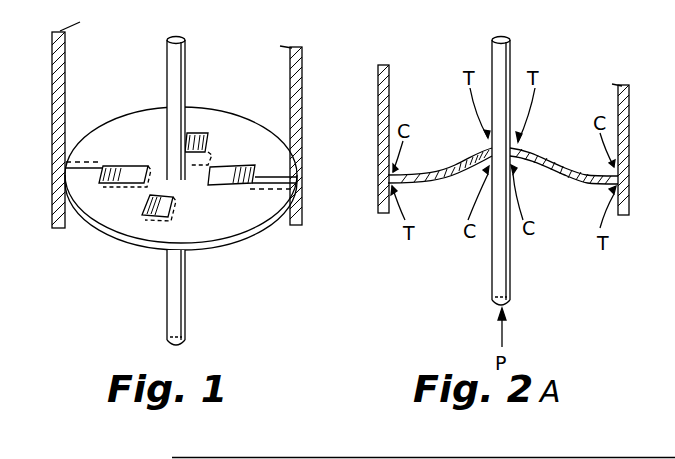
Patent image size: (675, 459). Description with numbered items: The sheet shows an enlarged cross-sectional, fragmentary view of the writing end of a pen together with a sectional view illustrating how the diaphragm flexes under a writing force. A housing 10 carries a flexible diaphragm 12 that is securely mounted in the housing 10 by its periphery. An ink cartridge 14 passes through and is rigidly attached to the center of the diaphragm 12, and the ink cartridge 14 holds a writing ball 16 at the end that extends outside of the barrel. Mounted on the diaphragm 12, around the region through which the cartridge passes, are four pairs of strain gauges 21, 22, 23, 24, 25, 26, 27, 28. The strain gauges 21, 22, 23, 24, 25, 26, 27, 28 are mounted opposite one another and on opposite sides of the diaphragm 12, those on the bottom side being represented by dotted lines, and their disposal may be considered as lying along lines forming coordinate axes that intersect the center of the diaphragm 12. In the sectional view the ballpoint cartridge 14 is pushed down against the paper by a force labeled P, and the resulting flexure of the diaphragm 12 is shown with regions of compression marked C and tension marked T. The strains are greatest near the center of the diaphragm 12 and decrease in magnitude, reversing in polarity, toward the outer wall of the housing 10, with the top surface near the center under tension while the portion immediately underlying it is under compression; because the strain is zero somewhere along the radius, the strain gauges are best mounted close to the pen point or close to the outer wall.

In FIG. 1, the housing 10 is at (296, 48).
In FIG. 2A, the housing 10 is at (622, 88).
In FIG. 1, the flexible diaphragm 12 is at (192, 252).
In FIG. 2A, the flexible diaphragm 12 is at (588, 184).
In FIG. 1, the ink cartridge 14 is at (170, 42).
In FIG. 2A, the ink cartridge 14 is at (512, 44).
In FIG. 1, the writing ball 16 is at (170, 343).
In FIG. 2A, the writing ball 16 is at (497, 303).
In FIG. 1, the strain gauge 21 is at (125, 165).
In FIG. 2A, the strain gauge 21 is at (487, 147).
In FIG. 1, the strain gauge 22 is at (100, 158).
In FIG. 2A, the strain gauge 22 is at (488, 160).
In FIG. 1, the strain gauge 23 is at (256, 168).
In FIG. 2A, the strain gauge 23 is at (518, 146).
In FIG. 1, the strain gauge 24 is at (228, 190).
In FIG. 2A, the strain gauge 24 is at (515, 165).
In FIG. 1, the strain gauge 25 is at (190, 134).
In FIG. 1, the strain gauge 26 is at (208, 160).
In FIG. 1, the strain gauge 27 is at (146, 216).
In FIG. 1, the strain gauge 28 is at (152, 222).